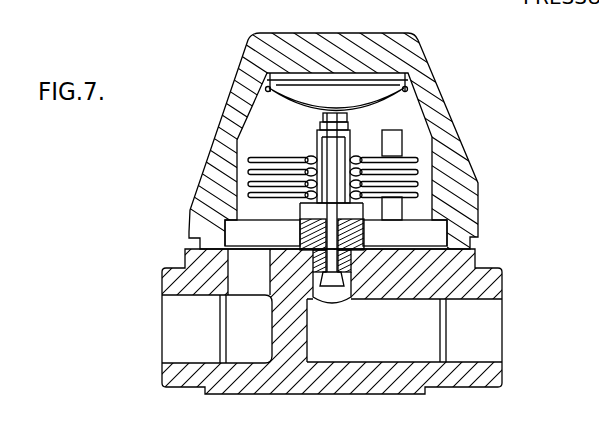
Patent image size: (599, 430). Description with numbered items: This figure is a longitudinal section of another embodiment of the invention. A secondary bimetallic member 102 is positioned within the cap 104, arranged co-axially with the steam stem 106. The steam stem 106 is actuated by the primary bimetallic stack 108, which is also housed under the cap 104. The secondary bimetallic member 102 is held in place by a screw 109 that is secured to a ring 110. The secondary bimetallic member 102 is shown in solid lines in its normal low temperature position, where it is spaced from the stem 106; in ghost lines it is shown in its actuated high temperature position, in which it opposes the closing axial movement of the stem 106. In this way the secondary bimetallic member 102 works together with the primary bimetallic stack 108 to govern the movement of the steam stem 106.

The secondary bimetallic member 102 is at (362, 83).
The cap 104 is at (240, 80).
The steam stem 106 is at (305, 208).
The primary bimetallic stack 108 is at (420, 189).
The screw 109 is at (400, 92).
The ring 110 is at (407, 76).